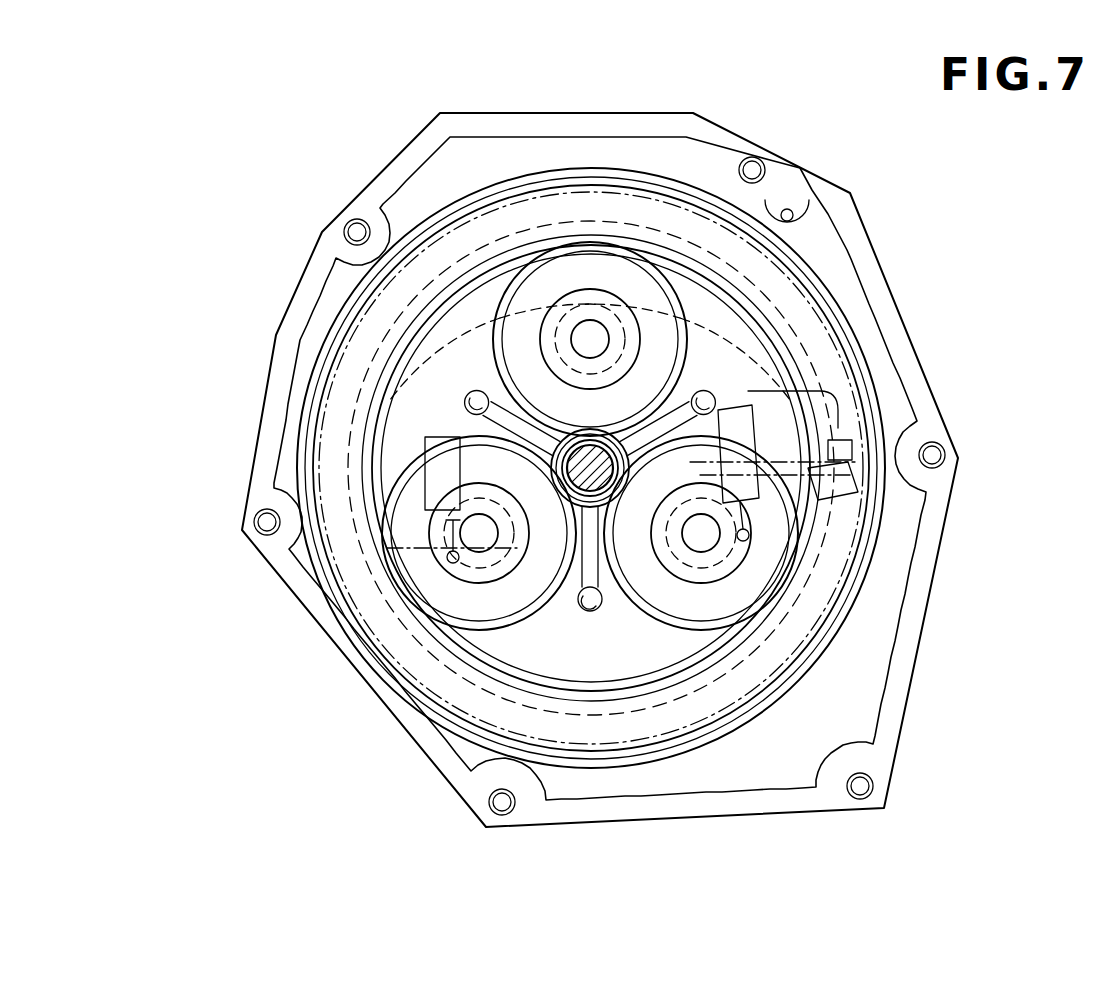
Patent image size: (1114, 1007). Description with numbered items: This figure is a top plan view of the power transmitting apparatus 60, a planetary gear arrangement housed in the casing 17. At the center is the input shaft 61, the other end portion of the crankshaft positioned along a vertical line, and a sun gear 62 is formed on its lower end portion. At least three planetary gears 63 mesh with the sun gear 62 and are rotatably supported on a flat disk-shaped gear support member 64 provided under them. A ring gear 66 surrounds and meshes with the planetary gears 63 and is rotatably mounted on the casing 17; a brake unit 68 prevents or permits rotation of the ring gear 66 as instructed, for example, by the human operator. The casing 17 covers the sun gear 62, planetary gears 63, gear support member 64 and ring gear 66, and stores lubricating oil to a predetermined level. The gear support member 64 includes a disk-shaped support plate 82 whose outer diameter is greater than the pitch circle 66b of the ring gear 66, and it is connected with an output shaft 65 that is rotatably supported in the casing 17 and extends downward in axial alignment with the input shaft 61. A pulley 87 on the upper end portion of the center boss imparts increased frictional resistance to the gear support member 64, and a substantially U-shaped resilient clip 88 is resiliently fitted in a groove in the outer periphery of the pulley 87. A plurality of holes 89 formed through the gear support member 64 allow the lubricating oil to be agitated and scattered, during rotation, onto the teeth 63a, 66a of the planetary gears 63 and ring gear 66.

The power transmitting apparatus 60 is at (263, 147).
The casing 17 is at (935, 298).
The input shaft 61 is at (574, 424).
The sun gear 62 is at (608, 436).
The planetary gears 63 is at (495, 290).
The teeth 63a is at (495, 275).
The gear support member 64 is at (818, 248).
The output shaft 65 is at (778, 596).
The ring gear 66 is at (773, 250).
The teeth 66a is at (804, 288).
The pitch circle 66b is at (655, 240).
The brake unit 68 is at (890, 376).
The support plate 82 is at (800, 212).
The pulley 87 is at (562, 500).
The resilient clip 88 is at (475, 548).
The holes 89 is at (395, 380).